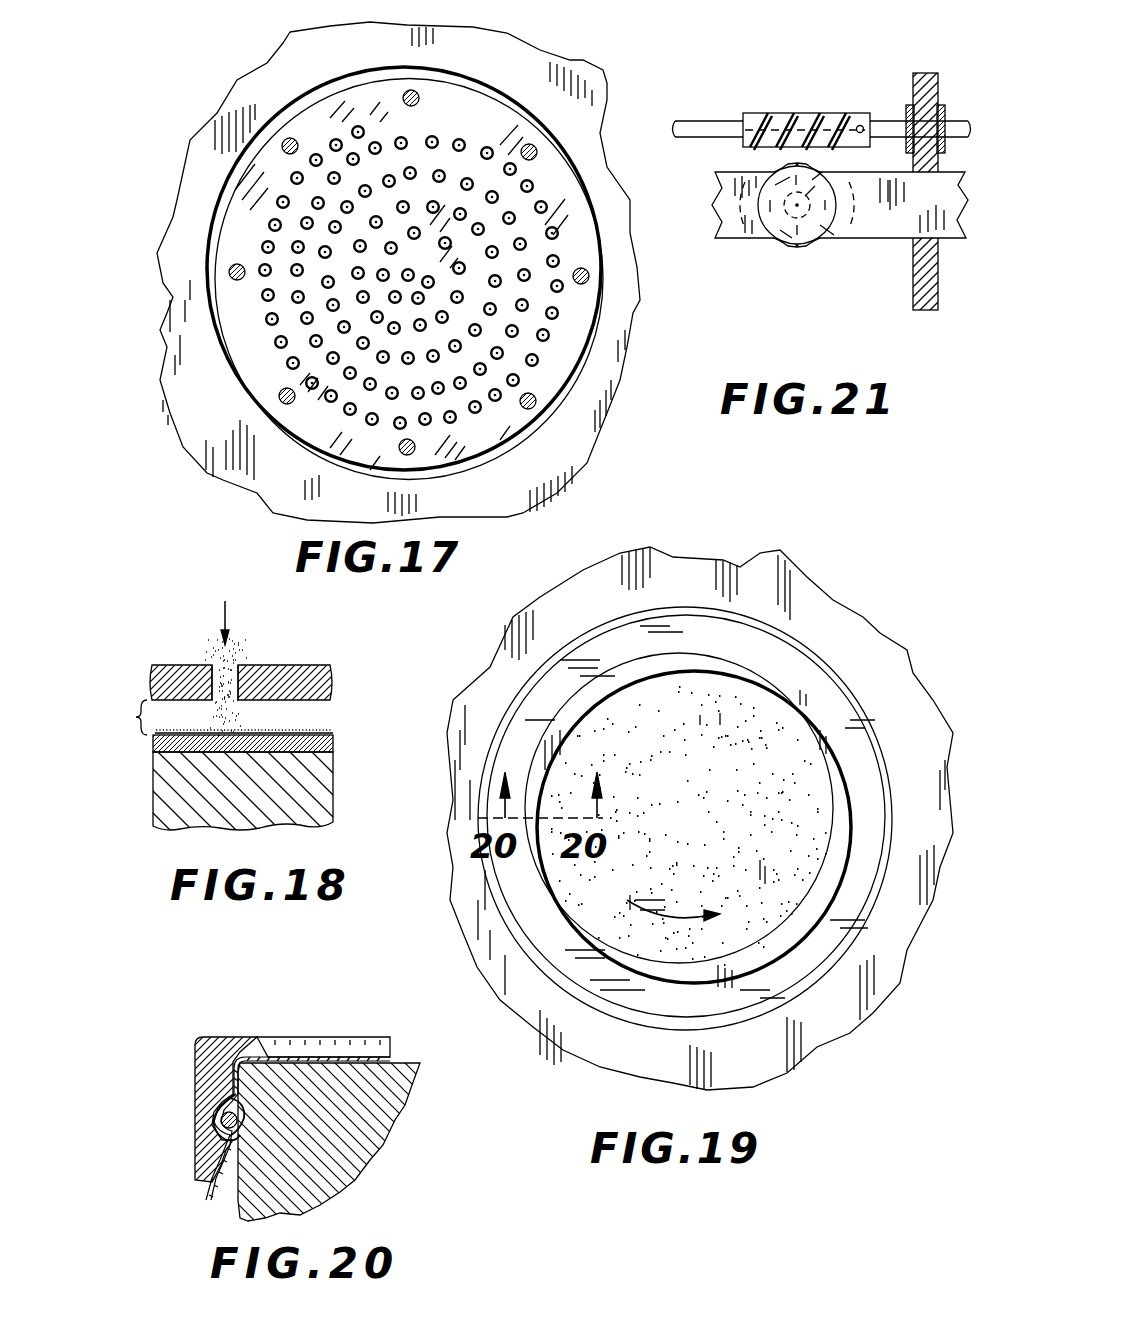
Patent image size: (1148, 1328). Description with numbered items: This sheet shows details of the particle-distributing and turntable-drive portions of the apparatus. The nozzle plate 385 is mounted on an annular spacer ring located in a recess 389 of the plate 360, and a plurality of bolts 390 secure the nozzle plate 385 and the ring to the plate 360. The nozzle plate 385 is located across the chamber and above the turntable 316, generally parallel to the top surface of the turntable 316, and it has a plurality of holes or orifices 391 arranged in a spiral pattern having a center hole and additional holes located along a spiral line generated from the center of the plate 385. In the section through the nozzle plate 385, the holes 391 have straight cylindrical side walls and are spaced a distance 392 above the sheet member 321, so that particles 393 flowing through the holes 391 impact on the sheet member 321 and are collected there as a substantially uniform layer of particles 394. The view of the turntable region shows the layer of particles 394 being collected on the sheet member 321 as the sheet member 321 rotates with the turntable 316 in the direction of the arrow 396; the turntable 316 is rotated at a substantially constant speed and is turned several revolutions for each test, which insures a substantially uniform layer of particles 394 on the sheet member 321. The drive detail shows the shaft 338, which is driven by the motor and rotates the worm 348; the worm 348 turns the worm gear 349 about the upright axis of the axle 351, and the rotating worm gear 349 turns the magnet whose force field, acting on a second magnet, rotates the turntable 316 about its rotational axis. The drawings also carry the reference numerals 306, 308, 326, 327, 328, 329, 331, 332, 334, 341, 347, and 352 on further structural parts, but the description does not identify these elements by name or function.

In FIG. 19, the housing 306 is at (702, 572).
In FIG. 21, the wall 308 is at (932, 300).
In FIG. 18, the turntable 316 is at (168, 786).
In FIG. 20, the turntable 316 is at (375, 1125).
In FIG. 18, the sheet member 321 is at (326, 744).
In FIG. 19, the sheet member 321 is at (808, 850).
In FIG. 20, the sheet member 321 is at (362, 1057).
In FIG. 19, the ring 326 is at (835, 775).
In FIG. 20, the ring 326 is at (195, 1045).
In FIG. 20, the foil 327 is at (195, 1165).
In FIG. 20, the bead 328 is at (212, 1118).
In FIG. 20, the wire 329 is at (237, 1118).
In FIG. 20, the clamp 331 is at (225, 1112).
In FIG. 19, the outer flange 332 is at (786, 660).
In FIG. 19, the rim 334 is at (855, 690).
In FIG. 21, the shaft 338 is at (712, 120).
In FIG. 21, the bushing 341 is at (907, 112).
In FIG. 21, the bar 347 is at (735, 240).
In FIG. 21, the worm 348 is at (798, 112).
In FIG. 21, the worm gear 349 is at (825, 236).
In FIG. 21, the axle 351 is at (792, 250).
In FIG. 21, the bore 352 is at (738, 203).
In FIG. 17, the plate 360 is at (578, 80).
In FIG. 17, the nozzle plate 385 is at (503, 117).
In FIG. 18, the nozzle plate 385 is at (278, 665).
In FIG. 17, the recess 389 is at (222, 190).
In FIG. 17, the bolts 390 is at (403, 97).
In FIG. 17, the holes 391 is at (439, 172).
In FIG. 18, the holes 391 is at (212, 665).
In FIG. 18, the gap 392 is at (136, 717).
In FIG. 18, the particles 393 is at (240, 724).
In FIG. 18, the layer of particles 394 is at (330, 733).
In FIG. 19, the layer of particles 394 is at (760, 903).
In FIG. 19, the arrow 396 is at (652, 912).